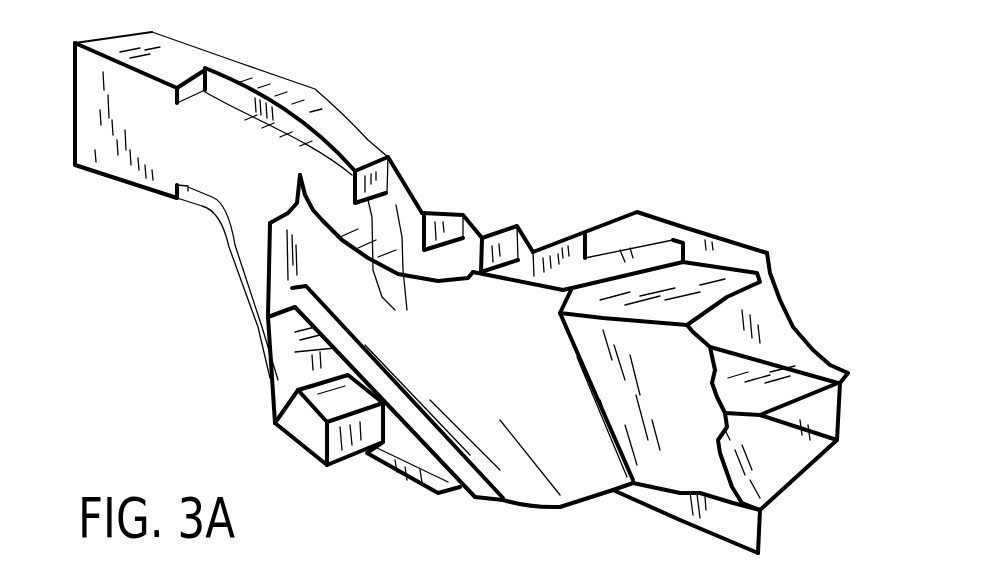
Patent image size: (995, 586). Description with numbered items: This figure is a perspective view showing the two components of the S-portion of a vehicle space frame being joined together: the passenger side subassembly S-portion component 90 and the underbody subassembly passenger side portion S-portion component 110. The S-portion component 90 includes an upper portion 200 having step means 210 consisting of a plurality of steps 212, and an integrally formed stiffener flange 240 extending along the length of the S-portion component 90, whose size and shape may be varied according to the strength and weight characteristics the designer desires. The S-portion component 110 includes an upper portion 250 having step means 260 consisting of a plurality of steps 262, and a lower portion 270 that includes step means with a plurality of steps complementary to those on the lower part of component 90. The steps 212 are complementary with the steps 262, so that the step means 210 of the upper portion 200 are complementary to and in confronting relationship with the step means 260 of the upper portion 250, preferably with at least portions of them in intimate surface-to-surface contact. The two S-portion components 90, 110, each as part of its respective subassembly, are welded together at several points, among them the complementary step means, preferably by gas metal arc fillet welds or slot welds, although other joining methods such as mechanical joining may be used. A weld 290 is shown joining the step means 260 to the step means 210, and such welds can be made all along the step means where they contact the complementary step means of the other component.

The passenger side subassembly S-portion component 90 is at (229, 31).
The underbody subassembly passenger side portion S-portion component 110 is at (207, 263).
The upper portion 200 is at (305, 82).
The step means 210 is at (420, 170).
The steps 212 is at (430, 190).
The stiffener flange 240 is at (753, 368).
The upper portion 250 is at (102, 143).
The step means 260 is at (465, 280).
The steps 262 is at (370, 299).
The lower portion 270 is at (560, 513).
The weld 290 is at (497, 227).